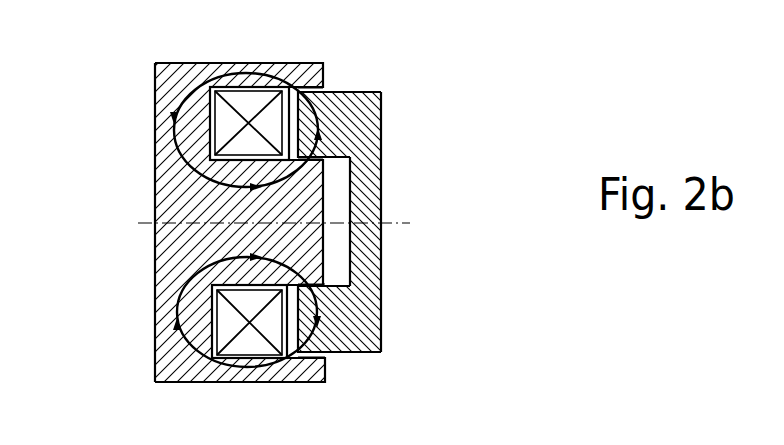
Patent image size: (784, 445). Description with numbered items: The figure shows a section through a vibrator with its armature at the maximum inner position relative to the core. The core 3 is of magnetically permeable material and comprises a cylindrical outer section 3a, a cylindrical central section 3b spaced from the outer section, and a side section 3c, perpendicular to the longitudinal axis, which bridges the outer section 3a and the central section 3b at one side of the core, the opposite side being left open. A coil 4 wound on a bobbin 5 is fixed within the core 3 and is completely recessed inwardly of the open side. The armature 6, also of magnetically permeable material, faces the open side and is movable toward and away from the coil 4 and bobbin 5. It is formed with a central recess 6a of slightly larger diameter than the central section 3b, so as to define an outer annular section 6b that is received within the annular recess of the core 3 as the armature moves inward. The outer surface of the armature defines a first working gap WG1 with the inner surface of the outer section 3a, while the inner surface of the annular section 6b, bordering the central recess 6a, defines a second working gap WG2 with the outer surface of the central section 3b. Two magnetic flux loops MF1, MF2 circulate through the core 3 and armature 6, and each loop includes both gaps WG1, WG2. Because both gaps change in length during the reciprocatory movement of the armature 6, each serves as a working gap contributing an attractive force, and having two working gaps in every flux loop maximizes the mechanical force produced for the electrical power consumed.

The core 3 is at (182, 233).
The outer section 3a is at (225, 80).
The central section 3b is at (192, 218).
The side section 3c is at (168, 292).
The coil 4 is at (279, 91).
The bobbin 5 is at (263, 97).
The armature 6 is at (394, 193).
The central recess 6a is at (336, 208).
The outer annular section 6b is at (350, 113).
The first working gap WG1 is at (393, 395).
The second working gap WG2 is at (326, 155).
The magnetic flux loop MF1 is at (178, 110).
The magnetic flux loop MF2 is at (196, 357).